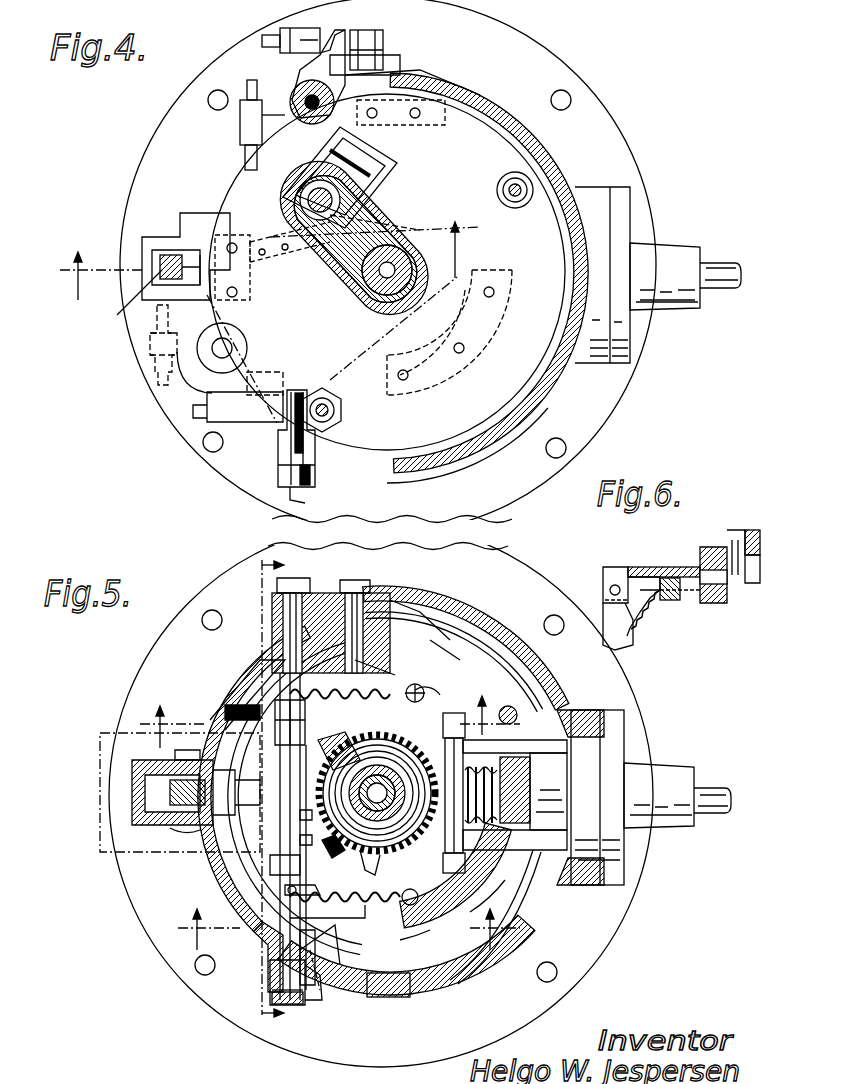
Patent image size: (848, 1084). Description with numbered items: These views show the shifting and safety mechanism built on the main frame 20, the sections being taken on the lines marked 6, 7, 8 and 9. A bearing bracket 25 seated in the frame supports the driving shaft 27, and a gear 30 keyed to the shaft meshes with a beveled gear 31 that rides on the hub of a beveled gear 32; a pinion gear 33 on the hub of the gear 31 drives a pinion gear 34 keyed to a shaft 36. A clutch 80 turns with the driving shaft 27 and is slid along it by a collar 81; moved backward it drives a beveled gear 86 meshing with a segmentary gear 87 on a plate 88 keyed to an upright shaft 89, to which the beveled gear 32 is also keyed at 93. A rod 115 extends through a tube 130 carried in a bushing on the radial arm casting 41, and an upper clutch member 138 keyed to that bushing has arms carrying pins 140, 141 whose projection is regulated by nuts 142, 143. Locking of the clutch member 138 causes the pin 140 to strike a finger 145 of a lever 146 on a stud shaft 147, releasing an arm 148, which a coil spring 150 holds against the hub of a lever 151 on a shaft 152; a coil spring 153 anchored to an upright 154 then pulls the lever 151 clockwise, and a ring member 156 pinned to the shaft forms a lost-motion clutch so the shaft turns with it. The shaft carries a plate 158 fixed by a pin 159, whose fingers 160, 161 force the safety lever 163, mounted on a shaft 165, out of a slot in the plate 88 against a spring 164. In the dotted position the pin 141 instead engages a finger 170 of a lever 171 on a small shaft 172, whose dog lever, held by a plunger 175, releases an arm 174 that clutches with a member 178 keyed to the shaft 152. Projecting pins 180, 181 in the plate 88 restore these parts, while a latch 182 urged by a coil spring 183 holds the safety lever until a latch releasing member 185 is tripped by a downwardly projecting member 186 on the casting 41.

In FIG. 4, the section line 6- 6 is at (270, 301).
In FIG. 5, the section line 7- 7 is at (338, 722).
In FIG. 5, the section line 8- 8 is at (349, 933).
In FIG. 5, the section line 9- 9 is at (256, 788).
In FIG. 4, the main frame 20 is at (560, 395).
In FIG. 5, the main frame 20 is at (190, 830).
In FIG. 4, the bearing bracket 25 is at (682, 255).
In FIG. 5, the bearing bracket 25 is at (662, 772).
In FIG. 4, the driving shaft 27 is at (726, 264).
In FIG. 5, the driving shaft 27 is at (716, 790).
In FIG. 5, the gear 30 is at (328, 850).
In FIG. 5, the beveled gear 31 is at (380, 860).
In FIG. 5, the beveled gear 32 is at (395, 740).
In FIG. 5, the pinion gear 33 is at (450, 862).
In FIG. 5, the pinion gear 34 is at (376, 740).
In FIG. 4, the shaft 36 is at (300, 205).
In FIG. 4, the radial arm casting 41 is at (404, 222).
In FIG. 5, the clutch 80 is at (495, 872).
In FIG. 5, the collar 81 is at (490, 757).
In FIG. 5, the beveled gear 86 is at (568, 712).
In FIG. 4, the segmentary gear 87 is at (520, 306).
In FIG. 5, the segmentary gear 87 is at (490, 900).
In FIG. 4, the plate 88 is at (478, 98).
In FIG. 6, the plate 88 is at (668, 567).
In FIG. 4, the upright shaft 89 is at (405, 303).
In FIG. 5, the upright shaft 89 is at (445, 697).
In FIG. 5, the keying point 93 is at (300, 772).
In FIG. 4, the rod 115 is at (330, 152).
In FIG. 4, the tube 130 is at (405, 70).
In FIG. 4, the upper clutch member 138 is at (292, 72).
In FIG. 4, the pin 140 is at (338, 30).
In FIG. 4, the pin 141 is at (244, 150).
In FIG. 4, the nut 142 is at (278, 43).
In FIG. 4, the nut 143 is at (246, 98).
In FIG. 4, the finger 145 is at (366, 32).
In FIG. 4, the lever 146 is at (386, 62).
In FIG. 5, the lever 146 is at (395, 575).
In FIG. 5, the stud shaft 147 is at (425, 635).
In FIG. 5, the arm 148 is at (405, 672).
In FIG. 5, the coil spring 150 is at (228, 700).
In FIG. 5, the lever 151 is at (252, 665).
In FIG. 5, the shaft 152 is at (268, 862).
In FIG. 5, the coil spring 153 is at (370, 1033).
In FIG. 5, the upright 154 is at (438, 675).
In FIG. 5, the ring member 156 is at (330, 700).
In FIG. 5, the plate 158 is at (298, 840).
In FIG. 5, the pin 159 is at (298, 818).
In FIG. 5, the finger 160 is at (162, 853).
In FIG. 5, the finger 161 is at (176, 752).
In FIG. 4, the safety lever 163 is at (190, 225).
In FIG. 5, the safety lever 163 is at (133, 790).
In FIG. 6, the safety lever 163 is at (610, 568).
In FIG. 4, the spring 164 is at (116, 302).
In FIG. 5, the shaft 165 is at (161, 722).
In FIG. 4, the finger 170 is at (278, 466).
In FIG. 4, the lever 171 is at (305, 500).
In FIG. 5, the lever 171 is at (292, 1005).
In FIG. 5, the shaft 172 is at (312, 1010).
In FIG. 5, the arm 174 is at (345, 990).
In FIG. 5, the plunger 175 is at (426, 944).
In FIG. 5, the member 178 is at (345, 872).
In FIG. 4, the projecting pin 180 is at (514, 210).
In FIG. 5, the projecting pin 180 is at (322, 595).
In FIG. 4, the projecting pin 181 is at (345, 412).
In FIG. 5, the projecting pin 181 is at (330, 1000).
In FIG. 6, the latch 182 is at (672, 592).
In FIG. 6, the coil spring 183 is at (655, 620).
In FIG. 4, the latch releasing member 185 is at (430, 128).
In FIG. 6, the latch releasing member 185 is at (715, 603).
In FIG. 4, the downwardly projecting member 186 is at (342, 292).
In FIG. 6, the downwardly projecting member 186 is at (742, 545).